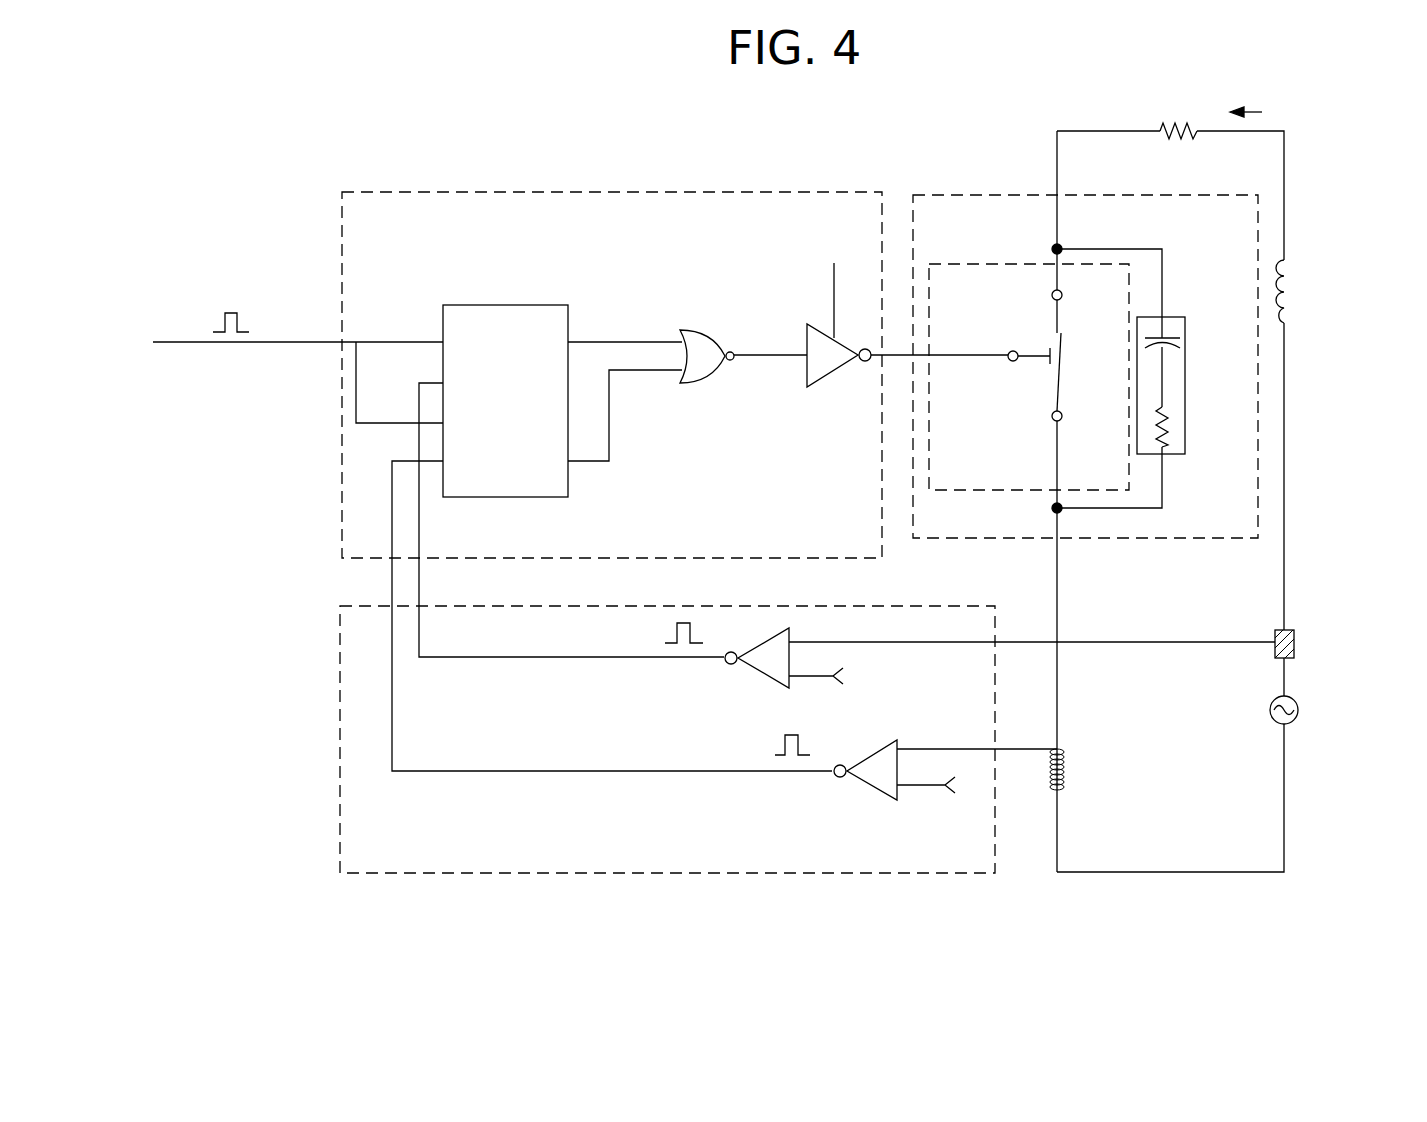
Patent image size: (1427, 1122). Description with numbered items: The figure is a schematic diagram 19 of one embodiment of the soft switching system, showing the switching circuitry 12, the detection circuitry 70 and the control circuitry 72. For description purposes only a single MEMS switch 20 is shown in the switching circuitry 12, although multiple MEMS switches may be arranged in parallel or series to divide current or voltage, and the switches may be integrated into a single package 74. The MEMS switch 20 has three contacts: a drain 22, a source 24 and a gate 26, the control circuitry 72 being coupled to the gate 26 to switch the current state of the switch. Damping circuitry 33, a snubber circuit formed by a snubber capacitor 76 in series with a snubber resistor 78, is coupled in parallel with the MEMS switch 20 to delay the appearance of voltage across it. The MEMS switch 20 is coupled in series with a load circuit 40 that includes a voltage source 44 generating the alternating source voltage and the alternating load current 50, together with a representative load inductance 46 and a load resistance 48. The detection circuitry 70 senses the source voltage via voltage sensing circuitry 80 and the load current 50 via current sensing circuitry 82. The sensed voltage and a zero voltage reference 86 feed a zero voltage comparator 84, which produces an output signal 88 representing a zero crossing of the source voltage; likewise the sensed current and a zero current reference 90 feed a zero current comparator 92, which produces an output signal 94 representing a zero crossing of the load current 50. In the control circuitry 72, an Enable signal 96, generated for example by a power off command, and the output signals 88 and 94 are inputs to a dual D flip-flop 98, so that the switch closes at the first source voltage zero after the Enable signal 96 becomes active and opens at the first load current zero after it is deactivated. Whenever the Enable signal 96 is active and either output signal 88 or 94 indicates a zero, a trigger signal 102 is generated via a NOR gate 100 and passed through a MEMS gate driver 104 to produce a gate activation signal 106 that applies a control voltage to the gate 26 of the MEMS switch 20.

The switching circuitry 12 is at (932, 194).
The schematic diagram 19 is at (283, 137).
The MEMS switch 20 is at (1045, 366).
The drain 22 is at (1063, 297).
The source 24 is at (1053, 420).
The gate 26 is at (1011, 362).
The damping circuitry 33 is at (1185, 355).
The load circuit 40 is at (1223, 473).
The voltage source 44 is at (1270, 720).
The load inductance 46 is at (1287, 272).
The load resistance 48 is at (1173, 123).
The load current 50 is at (1262, 112).
The detection circuitry 70 is at (340, 840).
The control circuitry 72 is at (563, 190).
The single package 74 is at (940, 263).
The snubber capacitor 76 is at (1185, 345).
The snubber resistor 78 is at (1170, 429).
The voltage sensing circuitry 80 is at (1289, 629).
The current sensing circuitry 82 is at (1066, 775).
The zero voltage comparator 84 is at (765, 684).
The zero voltage reference 86 is at (808, 678).
The output signal 88 is at (665, 641).
The zero current reference 90 is at (923, 787).
The zero current comparator 92 is at (870, 790).
The output signal 94 is at (775, 752).
The Enable signal 96 is at (236, 313).
The dual D flip-flop 98 is at (508, 305).
The NOR gate 100 is at (700, 330).
The trigger signal 102 is at (767, 357).
The MEMS gate driver 104 is at (835, 378).
The gate activation signal 106 is at (890, 355).